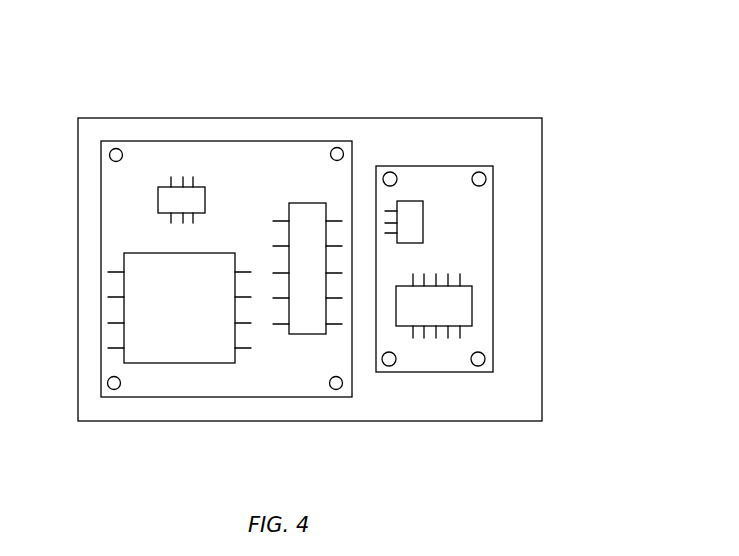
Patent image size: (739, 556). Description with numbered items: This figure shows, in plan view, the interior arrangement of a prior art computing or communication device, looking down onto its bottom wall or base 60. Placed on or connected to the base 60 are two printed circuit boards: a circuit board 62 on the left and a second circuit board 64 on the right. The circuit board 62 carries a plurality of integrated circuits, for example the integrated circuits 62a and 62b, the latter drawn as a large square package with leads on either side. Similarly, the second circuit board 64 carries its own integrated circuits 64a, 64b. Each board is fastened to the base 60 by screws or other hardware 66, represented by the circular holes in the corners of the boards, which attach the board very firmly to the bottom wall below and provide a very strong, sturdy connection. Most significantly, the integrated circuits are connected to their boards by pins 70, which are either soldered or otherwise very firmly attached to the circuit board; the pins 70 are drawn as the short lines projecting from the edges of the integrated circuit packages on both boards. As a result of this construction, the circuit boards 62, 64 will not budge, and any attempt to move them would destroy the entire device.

The bottom wall 60 is at (90, 134).
The circuit board 62 is at (263, 153).
The integrated circuit 62a is at (158, 200).
The integrated circuit 62b is at (147, 302).
The second circuit board 64 is at (454, 166).
The integrated circuit 64a is at (410, 200).
The integrated circuit 64b is at (472, 304).
The screws or other hardware 66 is at (107, 386).
The pins 70 is at (195, 185).